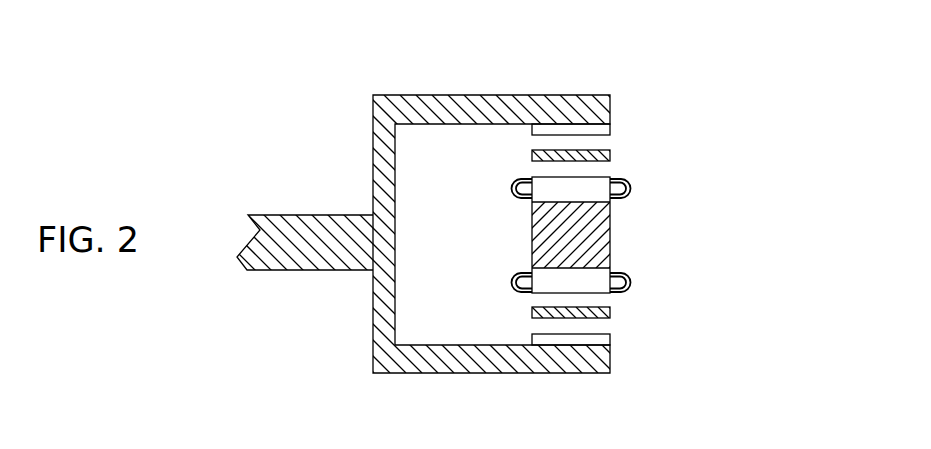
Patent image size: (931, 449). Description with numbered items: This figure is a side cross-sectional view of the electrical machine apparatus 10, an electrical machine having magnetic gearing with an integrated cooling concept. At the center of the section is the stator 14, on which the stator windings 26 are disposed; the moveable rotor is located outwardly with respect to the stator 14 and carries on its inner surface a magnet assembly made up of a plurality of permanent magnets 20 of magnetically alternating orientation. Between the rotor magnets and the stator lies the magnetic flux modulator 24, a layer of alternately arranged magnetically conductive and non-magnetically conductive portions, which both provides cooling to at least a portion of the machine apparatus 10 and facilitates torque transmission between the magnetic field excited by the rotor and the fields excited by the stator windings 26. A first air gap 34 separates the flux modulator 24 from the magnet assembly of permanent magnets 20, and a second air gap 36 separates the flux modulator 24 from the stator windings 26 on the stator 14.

The electrical machine apparatus 10 is at (662, 48).
The stator 14 is at (531, 242).
The permanent magnets 20 is at (607, 131).
The magnetic flux modulator 24 is at (531, 157).
The stator windings 26 is at (510, 188).
The first air gap 34 is at (607, 141).
The second air gap 36 is at (608, 168).